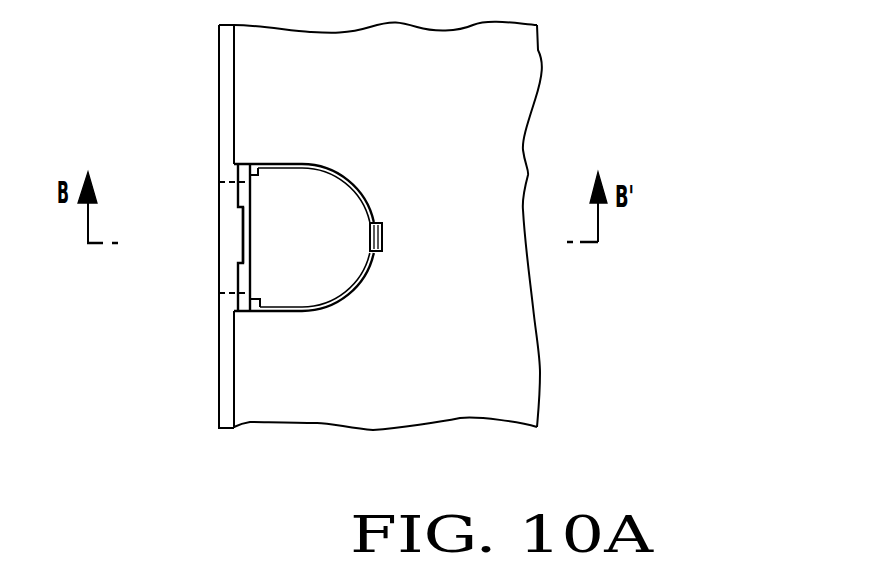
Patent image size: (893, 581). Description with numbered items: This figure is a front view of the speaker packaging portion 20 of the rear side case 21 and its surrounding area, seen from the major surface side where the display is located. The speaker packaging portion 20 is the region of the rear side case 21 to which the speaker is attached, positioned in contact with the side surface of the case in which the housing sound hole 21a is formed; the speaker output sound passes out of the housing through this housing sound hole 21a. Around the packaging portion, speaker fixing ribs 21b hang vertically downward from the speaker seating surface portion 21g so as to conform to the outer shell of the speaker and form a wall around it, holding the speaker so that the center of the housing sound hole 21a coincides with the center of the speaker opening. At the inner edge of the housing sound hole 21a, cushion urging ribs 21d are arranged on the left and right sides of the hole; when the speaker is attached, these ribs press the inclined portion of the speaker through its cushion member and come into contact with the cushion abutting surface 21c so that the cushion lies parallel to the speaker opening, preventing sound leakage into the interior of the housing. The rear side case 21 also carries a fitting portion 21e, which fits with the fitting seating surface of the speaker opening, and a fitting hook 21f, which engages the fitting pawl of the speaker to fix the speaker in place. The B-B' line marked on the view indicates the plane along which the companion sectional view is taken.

The speaker packaging portion 20 is at (285, 287).
The rear side case 21 is at (523, 55).
The housing sound hole 21a is at (232, 198).
The speaker fixing ribs 21b is at (354, 176).
The cushion abutting surface 21c is at (237, 278).
The cushion urging ribs 21d is at (261, 164).
The fitting portion 21e is at (240, 233).
The fitting hook 21f is at (383, 232).
The speaker seating surface portion 21g is at (301, 239).